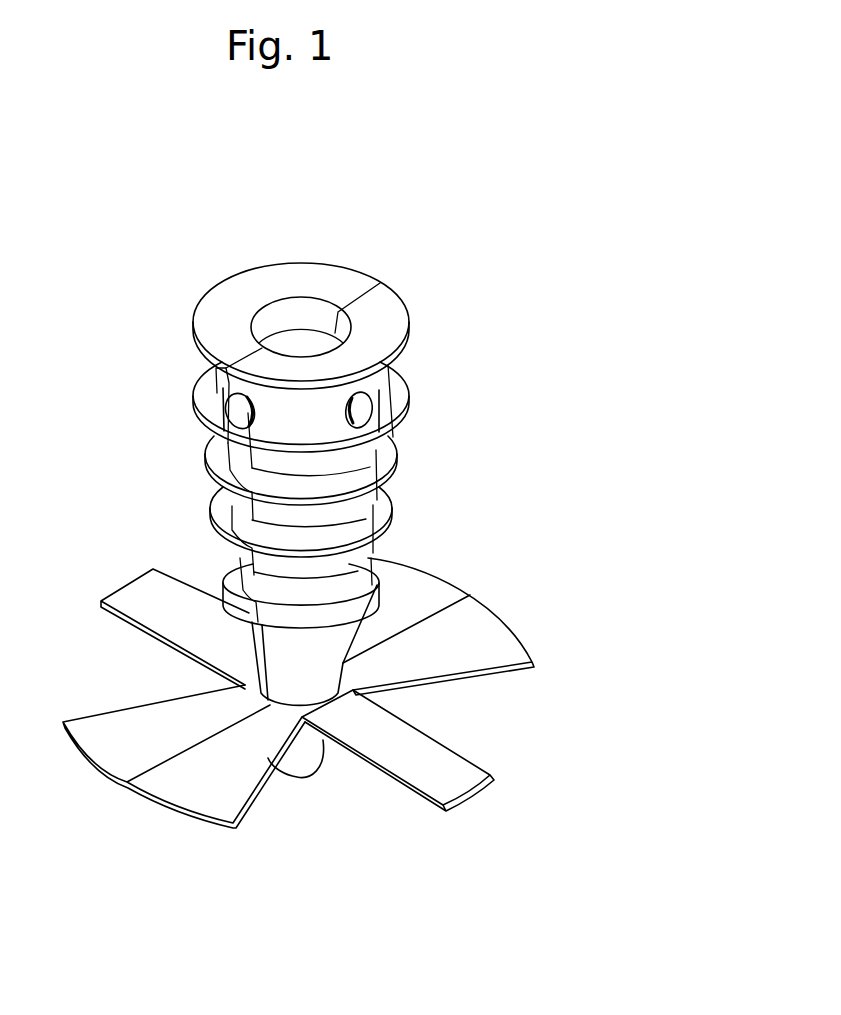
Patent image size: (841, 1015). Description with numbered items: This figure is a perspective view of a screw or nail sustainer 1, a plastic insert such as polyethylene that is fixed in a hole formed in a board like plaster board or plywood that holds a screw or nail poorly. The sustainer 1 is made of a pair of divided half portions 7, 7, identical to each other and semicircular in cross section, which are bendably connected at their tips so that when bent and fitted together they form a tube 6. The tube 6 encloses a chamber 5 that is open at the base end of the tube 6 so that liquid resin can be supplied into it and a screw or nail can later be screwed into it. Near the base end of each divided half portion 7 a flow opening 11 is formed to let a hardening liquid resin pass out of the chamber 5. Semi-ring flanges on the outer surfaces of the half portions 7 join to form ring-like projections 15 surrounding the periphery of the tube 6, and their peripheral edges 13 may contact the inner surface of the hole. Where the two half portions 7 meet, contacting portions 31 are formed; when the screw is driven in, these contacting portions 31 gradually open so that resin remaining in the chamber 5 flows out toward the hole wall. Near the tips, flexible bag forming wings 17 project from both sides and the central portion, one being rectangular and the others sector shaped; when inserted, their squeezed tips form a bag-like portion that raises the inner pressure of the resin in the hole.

The screw or nail sustainer 1 is at (434, 201).
The chamber 5 is at (303, 335).
The tube 6 is at (378, 388).
The divided half portion 7 is at (241, 291).
The flow opening 11 is at (237, 402).
The peripheral edge 13 is at (200, 407).
The ring-like projection 15 is at (227, 435).
The bag forming wing 17 is at (137, 723).
The contacting portion 31 is at (233, 522).